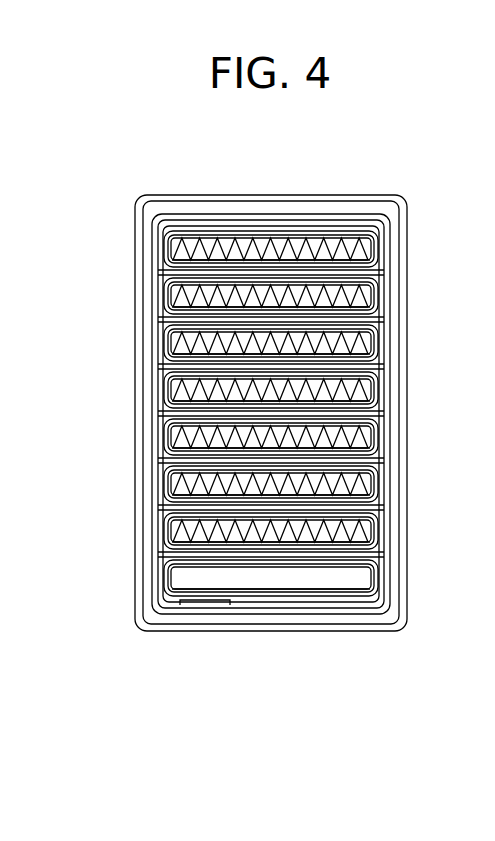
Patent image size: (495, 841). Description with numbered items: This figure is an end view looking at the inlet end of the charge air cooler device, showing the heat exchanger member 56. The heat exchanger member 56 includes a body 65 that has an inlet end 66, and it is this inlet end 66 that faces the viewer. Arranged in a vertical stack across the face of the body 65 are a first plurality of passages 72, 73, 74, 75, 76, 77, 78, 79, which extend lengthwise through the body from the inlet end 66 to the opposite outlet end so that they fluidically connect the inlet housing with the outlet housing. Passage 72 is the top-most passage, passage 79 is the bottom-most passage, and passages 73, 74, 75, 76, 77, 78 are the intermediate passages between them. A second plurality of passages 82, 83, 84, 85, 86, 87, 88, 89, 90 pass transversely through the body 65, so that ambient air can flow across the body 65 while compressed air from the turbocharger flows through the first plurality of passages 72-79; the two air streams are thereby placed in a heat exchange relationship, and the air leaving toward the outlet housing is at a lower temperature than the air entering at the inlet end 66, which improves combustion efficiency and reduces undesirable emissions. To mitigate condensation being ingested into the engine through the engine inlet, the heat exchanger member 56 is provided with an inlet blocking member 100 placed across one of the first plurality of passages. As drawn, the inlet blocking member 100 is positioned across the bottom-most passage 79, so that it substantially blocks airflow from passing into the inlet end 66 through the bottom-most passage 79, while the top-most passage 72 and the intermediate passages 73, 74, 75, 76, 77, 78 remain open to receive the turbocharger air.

The heat exchanger member 56 is at (350, 688).
The body 65 is at (183, 636).
The inlet end 66 is at (193, 234).
The passage 72 is at (175, 247).
The passage 73 is at (175, 294).
The passage 74 is at (175, 341).
The passage 75 is at (175, 388).
The passage 76 is at (175, 435).
The passage 77 is at (175, 482).
The passage 78 is at (175, 529).
The passage 79 is at (173, 590).
The passage 82 is at (288, 224).
The passage 83 is at (313, 254).
The passage 84 is at (313, 301).
The passage 85 is at (313, 348).
The passage 86 is at (313, 395).
The passage 87 is at (313, 442).
The passage 88 is at (313, 489).
The passage 89 is at (313, 536).
The passage 90 is at (313, 584).
The inlet blocking member 100 is at (243, 584).